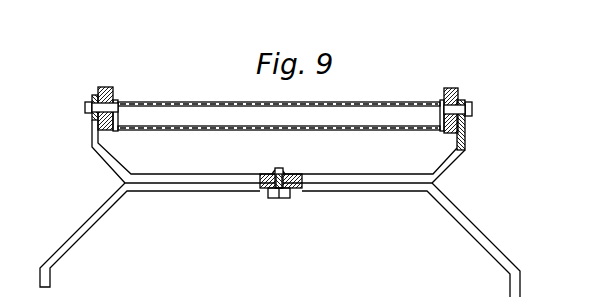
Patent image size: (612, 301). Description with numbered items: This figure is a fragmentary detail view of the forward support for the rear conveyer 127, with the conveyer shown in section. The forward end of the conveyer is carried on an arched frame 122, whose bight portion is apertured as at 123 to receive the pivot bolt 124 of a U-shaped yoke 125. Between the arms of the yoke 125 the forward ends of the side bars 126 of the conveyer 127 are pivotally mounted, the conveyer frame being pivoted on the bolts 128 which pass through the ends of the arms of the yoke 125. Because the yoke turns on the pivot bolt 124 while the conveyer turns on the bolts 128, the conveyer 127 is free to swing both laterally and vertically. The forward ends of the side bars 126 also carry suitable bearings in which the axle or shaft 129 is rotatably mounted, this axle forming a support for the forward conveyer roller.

The arched frame 122 is at (487, 249).
The aperture 123 is at (275, 199).
The pivot bolt 124 is at (292, 191).
The U-shaped yoke 125 is at (216, 173).
The side bars 126 is at (99, 88).
The rear conveyer 127 is at (116, 92).
The bolts 128 is at (92, 112).
The axle or shaft 129 is at (464, 97).